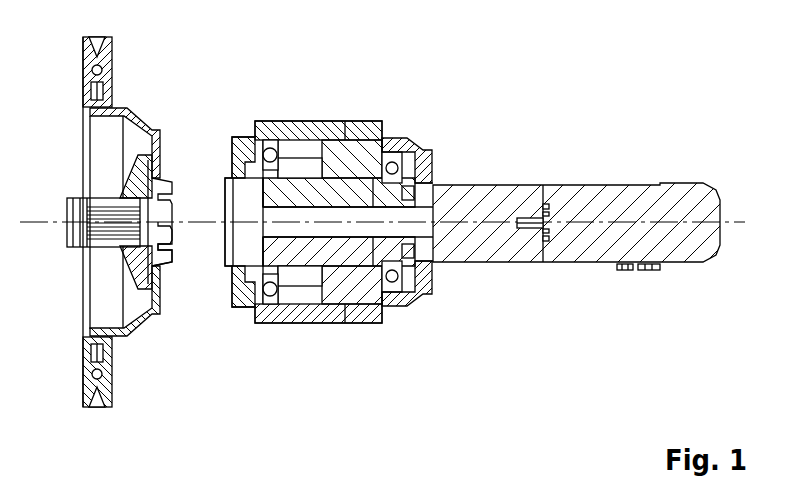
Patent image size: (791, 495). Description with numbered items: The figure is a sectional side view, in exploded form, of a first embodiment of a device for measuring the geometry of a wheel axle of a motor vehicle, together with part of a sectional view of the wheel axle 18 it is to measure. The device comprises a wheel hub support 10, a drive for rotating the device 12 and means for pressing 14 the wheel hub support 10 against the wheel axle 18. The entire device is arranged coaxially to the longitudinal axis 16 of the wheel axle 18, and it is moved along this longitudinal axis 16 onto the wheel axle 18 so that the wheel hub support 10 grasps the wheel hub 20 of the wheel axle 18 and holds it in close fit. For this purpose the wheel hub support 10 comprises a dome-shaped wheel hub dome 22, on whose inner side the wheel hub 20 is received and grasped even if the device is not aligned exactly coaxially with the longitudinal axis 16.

The wheel hub support 10 is at (217, 155).
The drive for rotating the device 12 is at (612, 197).
The means for pressing 14 is at (405, 142).
The longitudinal axis 16 is at (55, 238).
The wheel axle 18 is at (134, 106).
The wheel hub 20 is at (168, 252).
The wheel hub dome 22 is at (238, 238).